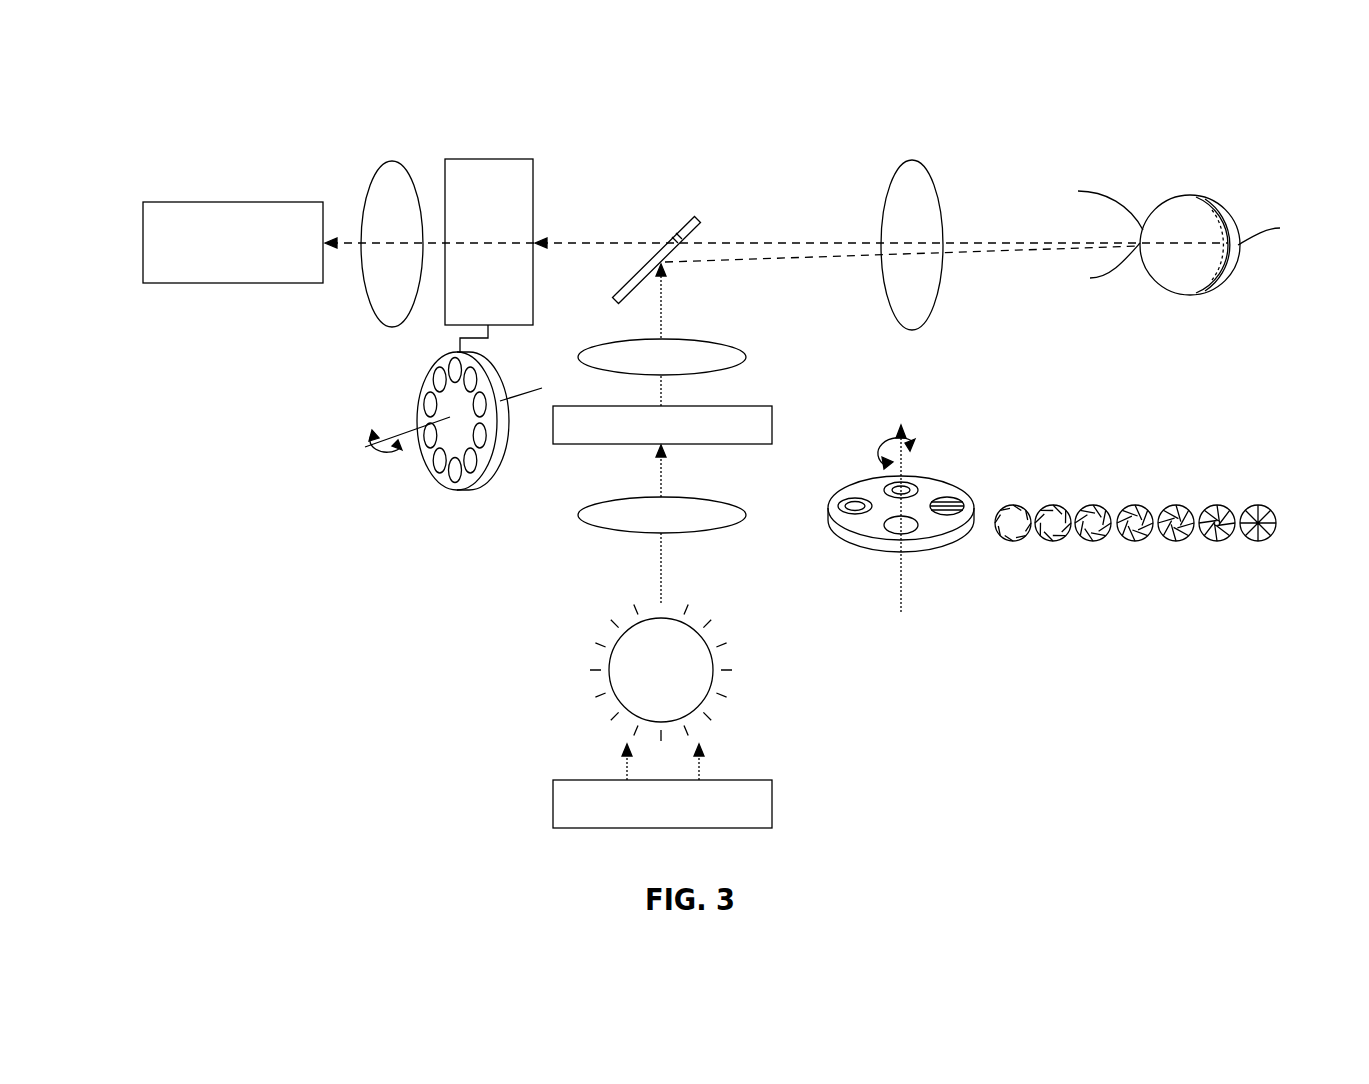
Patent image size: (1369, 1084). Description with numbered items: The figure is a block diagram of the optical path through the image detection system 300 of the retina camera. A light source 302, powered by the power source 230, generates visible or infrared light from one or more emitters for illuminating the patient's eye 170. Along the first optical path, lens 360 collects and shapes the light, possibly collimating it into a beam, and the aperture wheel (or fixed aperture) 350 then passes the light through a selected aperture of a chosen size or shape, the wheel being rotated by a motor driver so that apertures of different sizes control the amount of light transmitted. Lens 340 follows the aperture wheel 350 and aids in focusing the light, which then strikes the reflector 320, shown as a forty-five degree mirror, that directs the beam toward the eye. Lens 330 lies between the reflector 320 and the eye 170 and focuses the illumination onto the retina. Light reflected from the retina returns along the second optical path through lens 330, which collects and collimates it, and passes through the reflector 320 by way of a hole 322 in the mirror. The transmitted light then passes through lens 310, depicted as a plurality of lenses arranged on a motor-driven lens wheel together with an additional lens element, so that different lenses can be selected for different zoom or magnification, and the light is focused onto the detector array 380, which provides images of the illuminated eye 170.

The image detection system 300 is at (124, 129).
The detector array 380 is at (215, 202).
The lens 310 is at (357, 142).
The reflector 320 is at (695, 232).
The hole 322 is at (680, 234).
The lens 330 is at (912, 160).
The patient's eye 170 is at (1205, 198).
The lens 340 is at (735, 347).
The aperture wheel 350 is at (700, 406).
The lens 360 is at (670, 497).
The light source 302 is at (608, 676).
The power source 230 is at (553, 806).